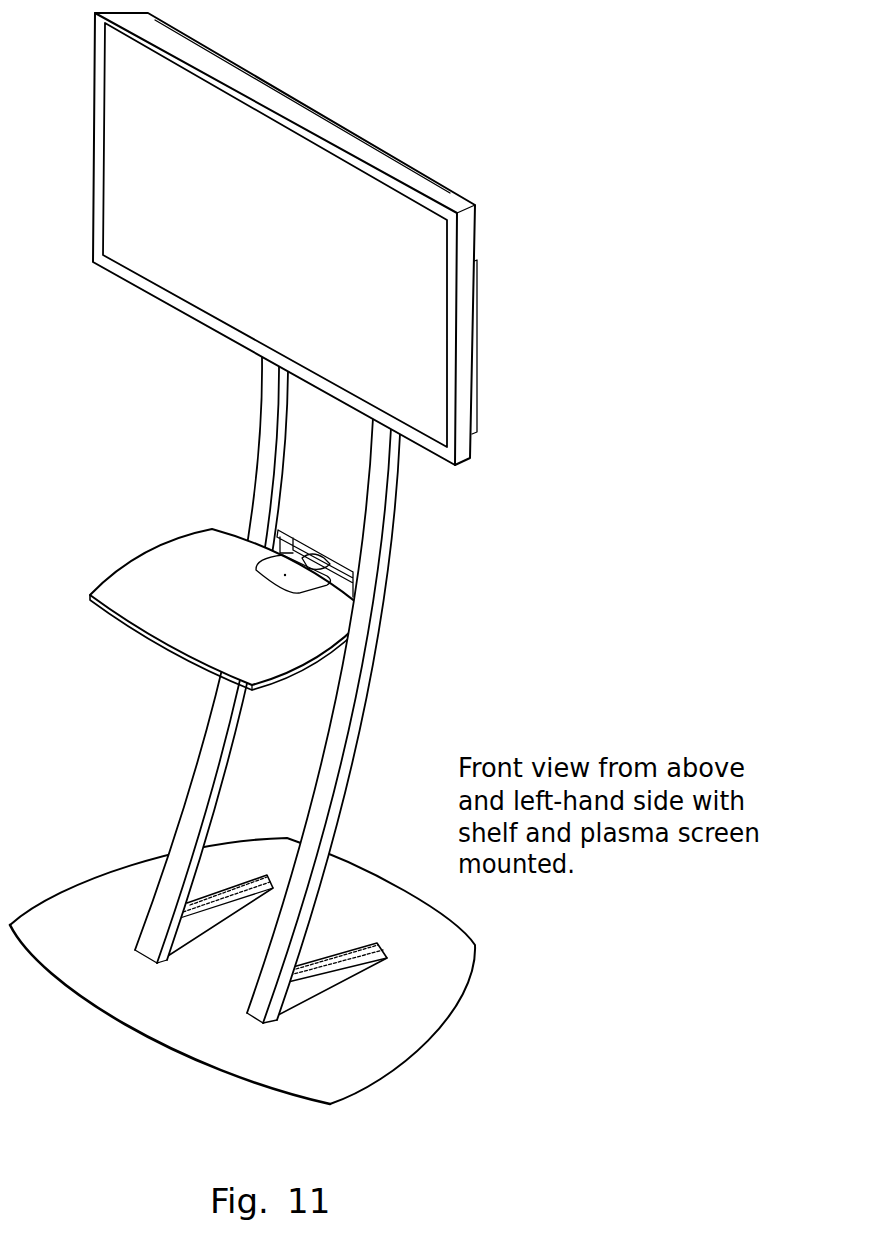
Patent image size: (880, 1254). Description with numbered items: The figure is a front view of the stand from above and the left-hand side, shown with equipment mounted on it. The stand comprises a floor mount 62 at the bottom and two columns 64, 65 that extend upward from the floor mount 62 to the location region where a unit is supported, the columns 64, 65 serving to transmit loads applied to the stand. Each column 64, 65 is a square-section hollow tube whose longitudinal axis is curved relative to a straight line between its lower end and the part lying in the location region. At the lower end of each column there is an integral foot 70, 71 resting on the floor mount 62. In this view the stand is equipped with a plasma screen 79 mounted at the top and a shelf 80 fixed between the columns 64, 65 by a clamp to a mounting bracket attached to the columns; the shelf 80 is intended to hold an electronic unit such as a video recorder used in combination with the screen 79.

The floor mount 62 is at (447, 942).
The column 64 is at (347, 675).
The column 65 is at (205, 742).
The integral foot 70 is at (343, 950).
The integral foot 71 is at (245, 880).
The plasma screen 79 is at (420, 292).
The shelf 80 is at (250, 623).